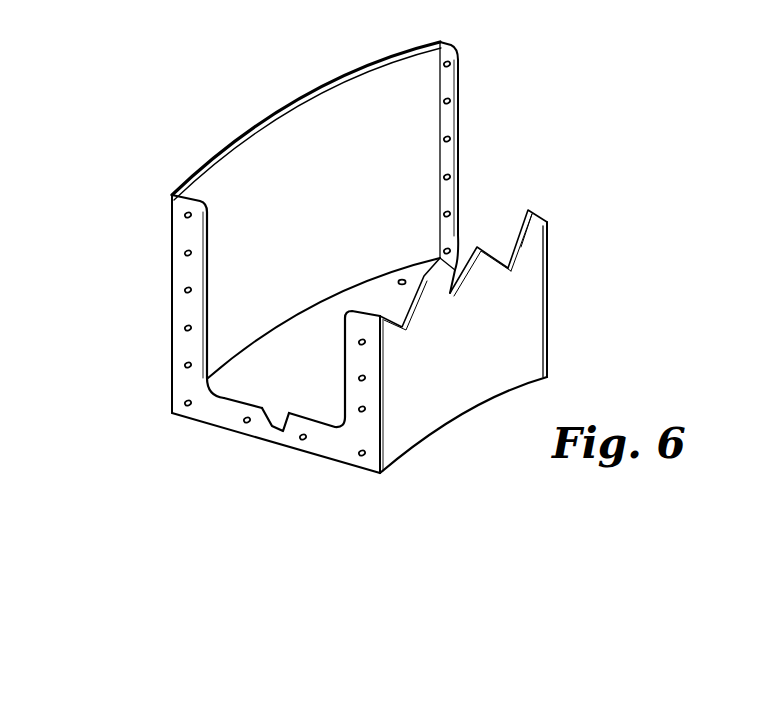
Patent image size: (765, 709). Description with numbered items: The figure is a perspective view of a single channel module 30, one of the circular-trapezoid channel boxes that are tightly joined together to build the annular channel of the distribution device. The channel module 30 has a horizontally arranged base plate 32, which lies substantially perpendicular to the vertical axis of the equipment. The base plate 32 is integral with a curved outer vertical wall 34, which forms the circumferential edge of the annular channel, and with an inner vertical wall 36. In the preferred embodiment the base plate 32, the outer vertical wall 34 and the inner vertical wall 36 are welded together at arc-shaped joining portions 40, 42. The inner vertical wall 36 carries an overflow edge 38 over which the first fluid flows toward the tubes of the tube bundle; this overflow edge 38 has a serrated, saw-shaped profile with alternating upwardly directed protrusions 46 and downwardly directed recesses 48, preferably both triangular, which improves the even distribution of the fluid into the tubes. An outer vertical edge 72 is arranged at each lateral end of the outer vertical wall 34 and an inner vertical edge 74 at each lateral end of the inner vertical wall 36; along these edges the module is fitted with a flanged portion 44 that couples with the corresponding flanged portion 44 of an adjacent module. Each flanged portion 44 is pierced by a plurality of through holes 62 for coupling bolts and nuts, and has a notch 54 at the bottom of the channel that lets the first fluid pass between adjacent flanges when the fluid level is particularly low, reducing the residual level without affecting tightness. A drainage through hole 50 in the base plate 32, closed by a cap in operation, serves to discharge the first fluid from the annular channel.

The channel module 30 is at (278, 90).
The base plate 32 is at (331, 402).
The outer vertical wall 34 is at (235, 188).
The inner vertical wall 36 is at (520, 317).
The overflow edge 38 is at (520, 243).
The arc-shaped joining portion 40 is at (227, 362).
The arc-shaped joining portion 42 is at (420, 437).
The flanged portion 44 is at (183, 307).
The upwardly directed protrusion 46 is at (417, 293).
The downwardly directed recess 48 is at (398, 322).
The drainage through hole 50 is at (402, 278).
The notch 54 is at (270, 427).
The through hole 62 is at (185, 403).
The outer vertical edge 72 is at (170, 242).
The inner vertical edge 74 is at (383, 393).